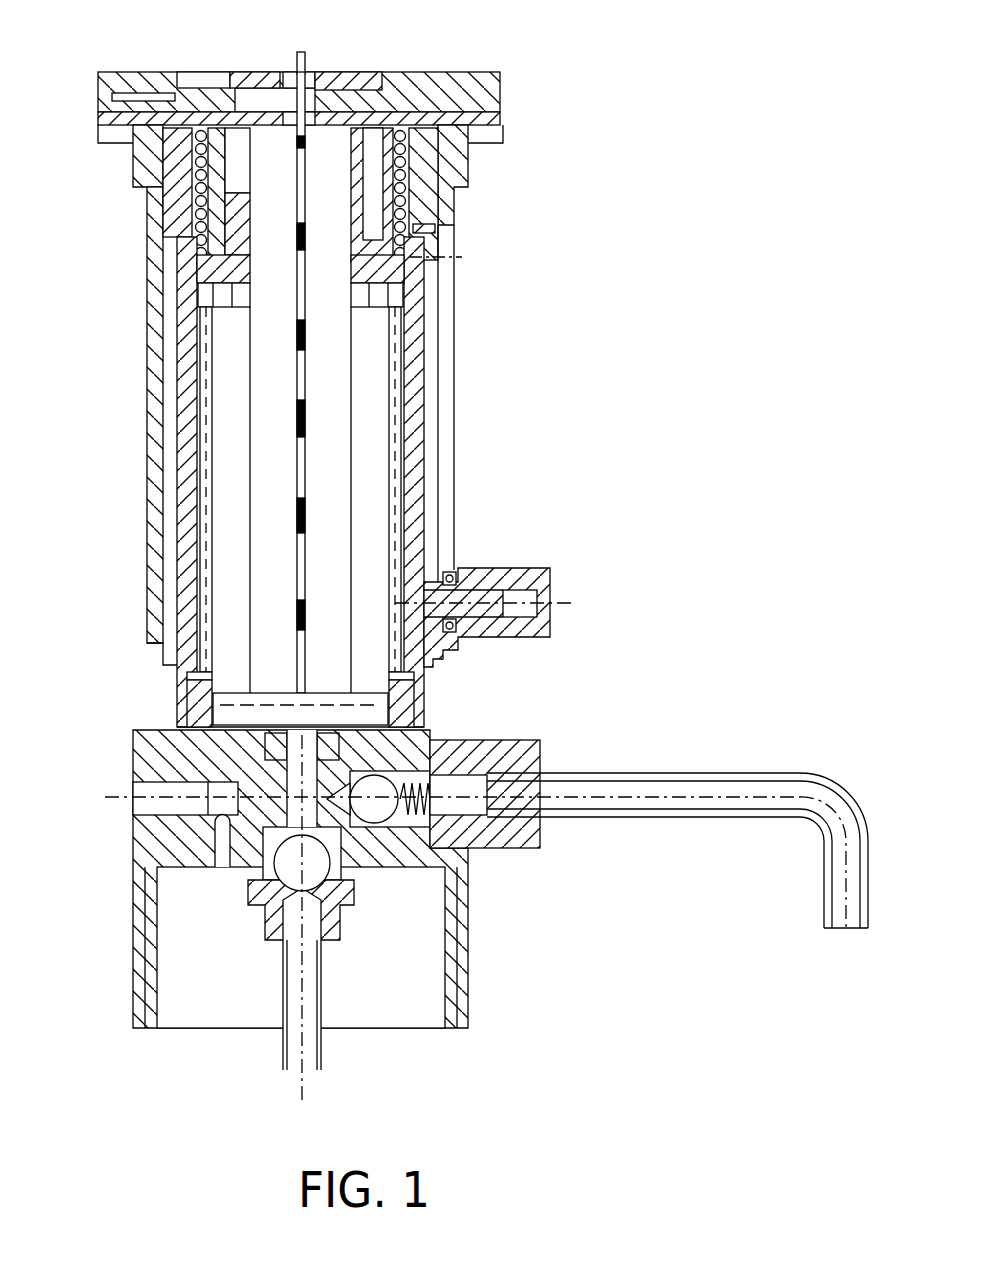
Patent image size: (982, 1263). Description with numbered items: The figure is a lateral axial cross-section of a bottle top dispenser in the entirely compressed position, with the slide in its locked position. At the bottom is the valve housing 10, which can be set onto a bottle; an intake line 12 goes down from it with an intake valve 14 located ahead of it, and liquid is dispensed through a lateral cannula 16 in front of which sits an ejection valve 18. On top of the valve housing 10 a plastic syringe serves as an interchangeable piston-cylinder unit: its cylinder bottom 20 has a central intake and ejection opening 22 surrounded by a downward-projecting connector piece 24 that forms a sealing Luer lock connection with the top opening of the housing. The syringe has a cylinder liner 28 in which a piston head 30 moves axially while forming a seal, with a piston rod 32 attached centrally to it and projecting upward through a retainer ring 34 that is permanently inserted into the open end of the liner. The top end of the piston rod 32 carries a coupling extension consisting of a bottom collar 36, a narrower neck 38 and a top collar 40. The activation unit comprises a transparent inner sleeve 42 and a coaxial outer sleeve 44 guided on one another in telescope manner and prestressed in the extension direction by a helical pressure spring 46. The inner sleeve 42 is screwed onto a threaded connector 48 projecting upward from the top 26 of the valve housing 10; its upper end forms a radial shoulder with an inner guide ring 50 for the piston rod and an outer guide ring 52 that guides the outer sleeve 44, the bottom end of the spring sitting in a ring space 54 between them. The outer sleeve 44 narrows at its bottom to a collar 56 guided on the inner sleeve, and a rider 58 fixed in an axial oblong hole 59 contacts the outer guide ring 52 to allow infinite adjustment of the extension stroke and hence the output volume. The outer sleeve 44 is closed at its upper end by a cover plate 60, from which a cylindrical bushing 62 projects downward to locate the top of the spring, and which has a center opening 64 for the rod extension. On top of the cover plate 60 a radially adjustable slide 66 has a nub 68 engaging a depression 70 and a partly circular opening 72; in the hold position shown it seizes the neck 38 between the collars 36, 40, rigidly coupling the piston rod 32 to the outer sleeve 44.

The valve housing 10 is at (160, 848).
The intake line 12 is at (283, 1037).
The intake valve 14 is at (267, 912).
The lateral cannula 16 is at (820, 780).
The ejection valve 18 is at (390, 870).
The cylinder bottom 20 is at (280, 733).
The intake and ejection opening 22 is at (307, 723).
The connector piece 24 is at (345, 735).
The top 26 is at (140, 723).
The cylinder liner 28 is at (212, 475).
The piston head 30 is at (217, 723).
The piston rod 32 is at (250, 545).
The retainer ring 34 is at (222, 300).
The bottom collar 36 is at (291, 137).
The neck 38 is at (307, 97).
The top collar 40 is at (291, 77).
The inner sleeve 42 is at (178, 385).
The outer sleeve 44 is at (150, 325).
The helical pressure spring 46 is at (165, 207).
The threaded connector 48 is at (410, 702).
The inner guide ring 50 is at (357, 247).
The outer guide ring 52 is at (440, 180).
The ring space 54 is at (433, 230).
The collar 56 is at (163, 662).
The rider 58 is at (493, 577).
The axial oblong hole 59 is at (440, 352).
The cover plate 60 is at (488, 118).
The cylindrical bushing 62 is at (143, 165).
The center opening 64 is at (327, 143).
The slide 66 is at (477, 97).
The nub 68 is at (138, 99).
The depression 70 is at (100, 122).
The opening 72 is at (243, 97).